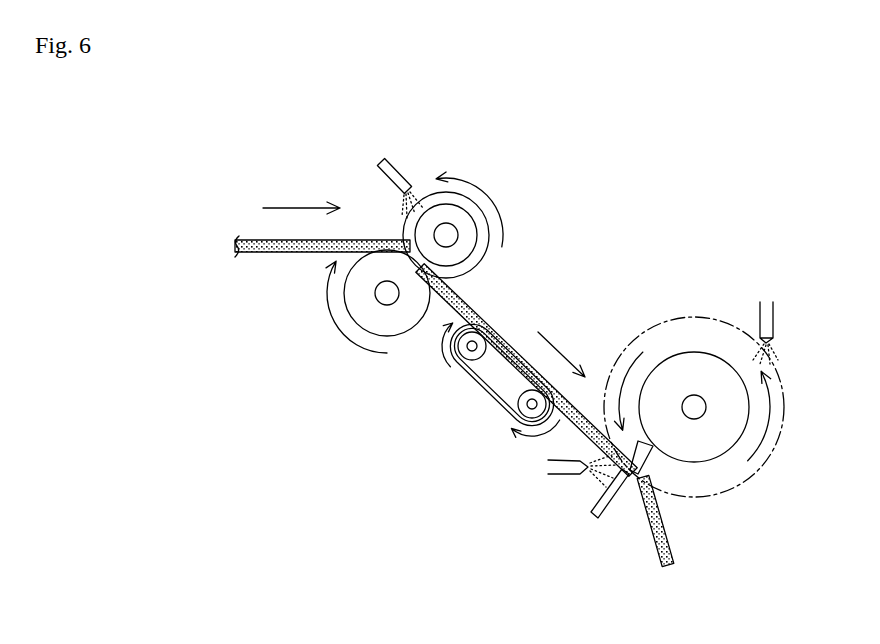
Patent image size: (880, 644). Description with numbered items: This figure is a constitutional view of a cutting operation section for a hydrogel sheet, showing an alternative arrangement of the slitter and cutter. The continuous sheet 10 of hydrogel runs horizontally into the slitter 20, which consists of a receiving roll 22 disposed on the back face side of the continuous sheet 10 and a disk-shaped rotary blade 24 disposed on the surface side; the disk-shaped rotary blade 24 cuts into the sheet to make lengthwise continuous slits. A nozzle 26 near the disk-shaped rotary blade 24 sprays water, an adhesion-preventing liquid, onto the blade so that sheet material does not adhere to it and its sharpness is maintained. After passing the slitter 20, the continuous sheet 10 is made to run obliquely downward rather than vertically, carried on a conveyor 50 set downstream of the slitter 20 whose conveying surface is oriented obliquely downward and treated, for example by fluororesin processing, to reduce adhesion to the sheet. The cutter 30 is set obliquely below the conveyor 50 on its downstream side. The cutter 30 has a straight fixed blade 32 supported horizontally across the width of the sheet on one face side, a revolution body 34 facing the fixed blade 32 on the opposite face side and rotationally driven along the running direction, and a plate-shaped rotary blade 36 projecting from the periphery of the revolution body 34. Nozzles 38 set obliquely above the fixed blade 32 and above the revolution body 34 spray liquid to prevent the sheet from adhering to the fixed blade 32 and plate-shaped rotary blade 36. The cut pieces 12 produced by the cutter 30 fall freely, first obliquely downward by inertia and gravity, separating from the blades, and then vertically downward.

The continuous sheet 10 is at (290, 253).
The cut pieces 12 is at (674, 540).
The slitter 20 is at (497, 268).
The receiving roll 22 is at (398, 328).
The disk-shaped rotary blade 24 is at (460, 274).
The nozzle 26 is at (398, 176).
The cutter 30 is at (687, 337).
The fixed blade 32 is at (620, 494).
The revolution body 34 is at (718, 357).
The plate-shaped rotary blade 36 is at (646, 458).
The nozzles 38 is at (774, 327).
The conveyor 50 is at (487, 386).